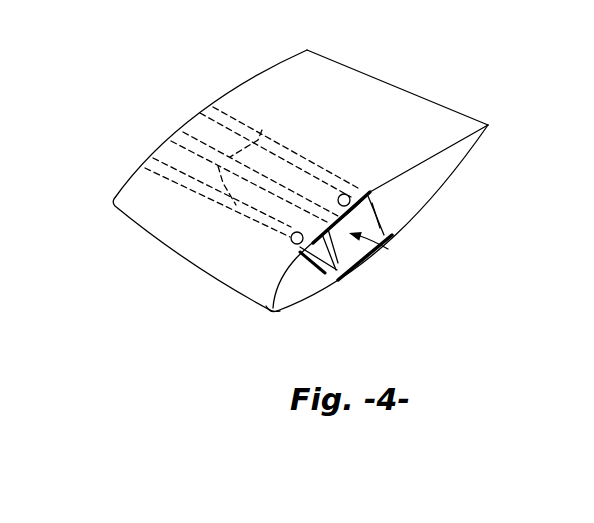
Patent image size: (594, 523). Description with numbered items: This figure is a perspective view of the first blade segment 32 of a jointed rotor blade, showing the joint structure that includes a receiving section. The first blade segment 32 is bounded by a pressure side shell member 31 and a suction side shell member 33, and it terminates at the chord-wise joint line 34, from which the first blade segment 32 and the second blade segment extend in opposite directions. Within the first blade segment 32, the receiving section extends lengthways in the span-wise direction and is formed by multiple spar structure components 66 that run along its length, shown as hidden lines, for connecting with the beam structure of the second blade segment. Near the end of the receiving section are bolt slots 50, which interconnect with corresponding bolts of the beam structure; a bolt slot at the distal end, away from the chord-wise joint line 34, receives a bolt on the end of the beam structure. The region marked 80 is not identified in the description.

The pressure side shell member 31 is at (441, 107).
The first blade segment 32 is at (363, 75).
The suction side shell member 33 is at (454, 173).
The chord-wise joint line 34 is at (285, 322).
The bolt slots 50 is at (346, 193).
The spar structure components 66 is at (288, 160).
The trailing edge slot 80 is at (389, 249).